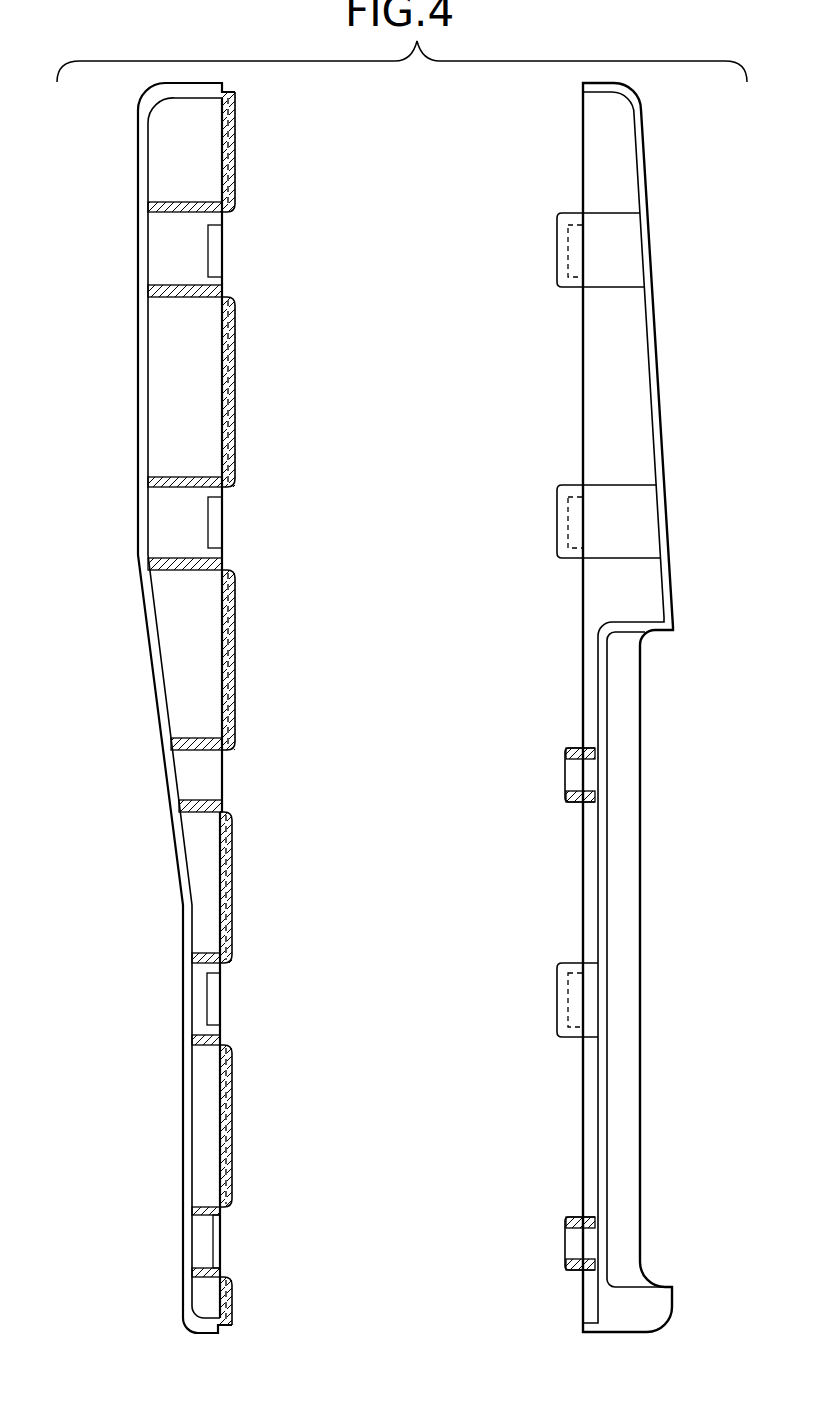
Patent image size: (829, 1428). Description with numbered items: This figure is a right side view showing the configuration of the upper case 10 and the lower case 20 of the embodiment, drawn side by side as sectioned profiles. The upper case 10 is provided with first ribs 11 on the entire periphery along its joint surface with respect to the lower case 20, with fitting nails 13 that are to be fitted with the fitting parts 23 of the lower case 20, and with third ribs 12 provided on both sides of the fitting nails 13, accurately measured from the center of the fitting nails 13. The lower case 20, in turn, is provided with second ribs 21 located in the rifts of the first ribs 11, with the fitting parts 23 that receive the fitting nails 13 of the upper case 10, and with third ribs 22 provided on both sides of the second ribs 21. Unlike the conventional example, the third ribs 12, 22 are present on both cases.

The upper case 10 is at (162, 148).
The first ribs 11 is at (235, 150).
The third ribs 12 is at (177, 290).
The fitting nails 13 is at (215, 245).
The lower case 20 is at (612, 133).
The second ribs 21 is at (560, 777).
The third ribs 22 is at (596, 790).
The fitting parts 23 is at (557, 246).